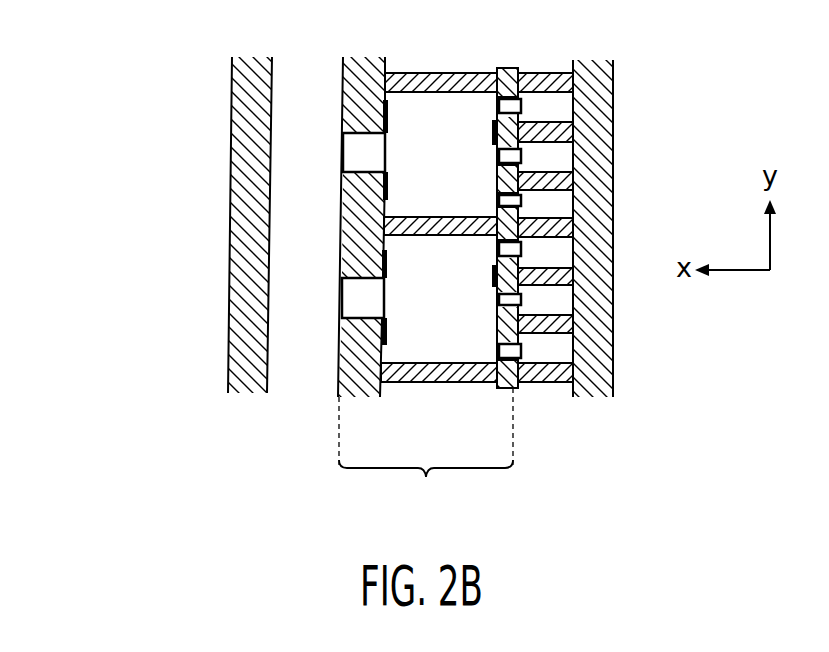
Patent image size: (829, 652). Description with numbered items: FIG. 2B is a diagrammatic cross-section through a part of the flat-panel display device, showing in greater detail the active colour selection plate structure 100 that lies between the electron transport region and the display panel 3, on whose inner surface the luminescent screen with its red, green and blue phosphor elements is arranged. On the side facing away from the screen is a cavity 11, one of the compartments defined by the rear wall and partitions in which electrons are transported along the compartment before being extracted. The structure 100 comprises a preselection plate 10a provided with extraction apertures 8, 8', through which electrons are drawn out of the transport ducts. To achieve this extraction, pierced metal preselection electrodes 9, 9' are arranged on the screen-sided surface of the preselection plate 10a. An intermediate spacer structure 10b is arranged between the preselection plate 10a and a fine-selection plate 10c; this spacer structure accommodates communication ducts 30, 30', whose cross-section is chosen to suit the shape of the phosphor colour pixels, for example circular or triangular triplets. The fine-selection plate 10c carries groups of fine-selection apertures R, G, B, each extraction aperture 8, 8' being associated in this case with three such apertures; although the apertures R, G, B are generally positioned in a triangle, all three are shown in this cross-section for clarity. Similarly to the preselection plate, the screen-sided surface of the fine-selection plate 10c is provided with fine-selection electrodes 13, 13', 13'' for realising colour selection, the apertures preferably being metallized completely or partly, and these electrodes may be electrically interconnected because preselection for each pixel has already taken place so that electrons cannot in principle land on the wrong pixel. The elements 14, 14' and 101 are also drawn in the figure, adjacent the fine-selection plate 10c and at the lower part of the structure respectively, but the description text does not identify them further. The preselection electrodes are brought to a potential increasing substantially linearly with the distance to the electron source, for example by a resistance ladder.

The cavity 11 is at (298, 83).
The extraction aperture 8 is at (377, 91).
The extraction aperture 8' is at (333, 356).
The communication duct 30 is at (441, 68).
The communication duct 30' is at (439, 396).
The pixel electrode 14 is at (482, 77).
The pixel electrode 14' is at (459, 294).
The red fine-selection aperture R is at (522, 68).
The green fine-selection aperture G is at (522, 160).
The blue fine-selection aperture B is at (522, 216).
The fine-selection electrode 13 is at (591, 199).
The fine-selection electrode 13' is at (588, 139).
The fine-selection electrode 13'' is at (592, 241).
The display panel 3 is at (600, 110).
The preselection electrode 9 is at (410, 189).
The preselection electrode 9' is at (405, 267).
The preselection plate 10a is at (357, 386).
The intermediate spacer structure 10b is at (450, 377).
The fine-selection plate 10c is at (507, 388).
The partition wall 101 is at (543, 385).
The active colour selection plate structure 100 is at (426, 449).